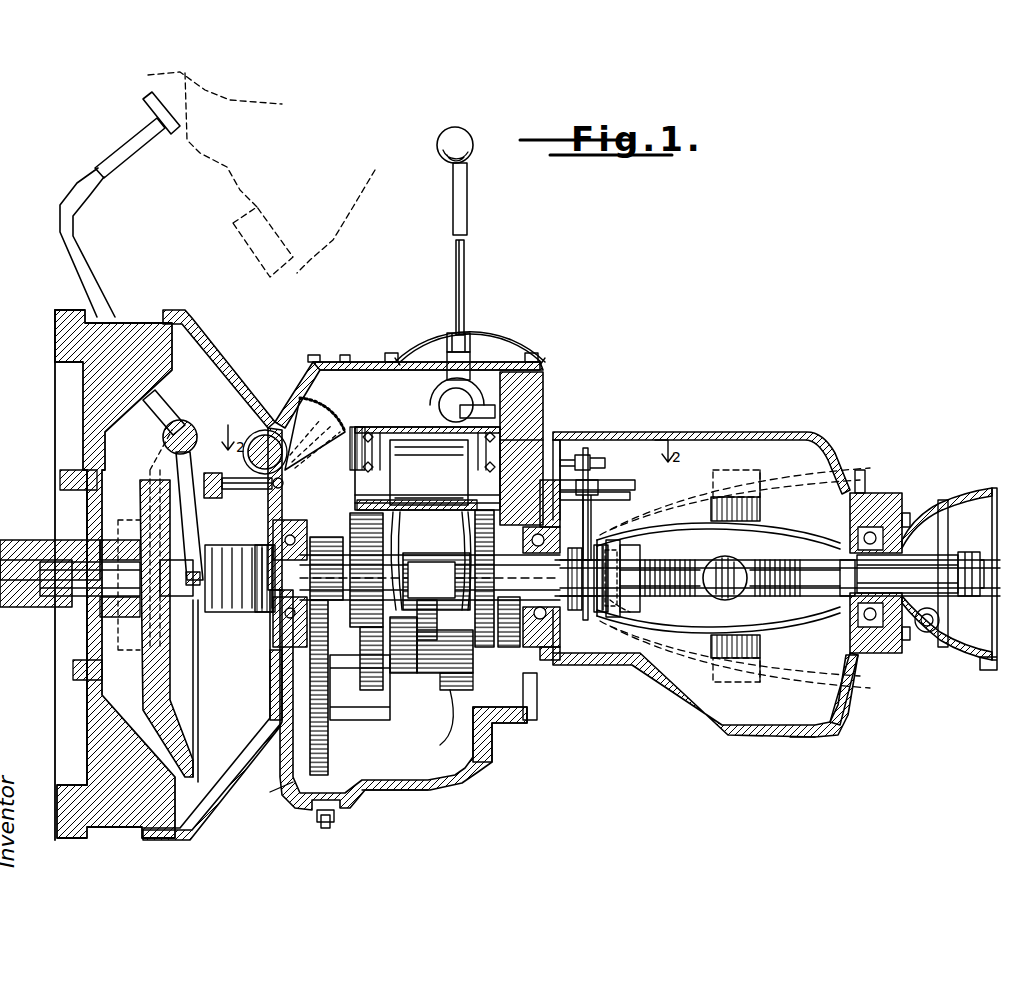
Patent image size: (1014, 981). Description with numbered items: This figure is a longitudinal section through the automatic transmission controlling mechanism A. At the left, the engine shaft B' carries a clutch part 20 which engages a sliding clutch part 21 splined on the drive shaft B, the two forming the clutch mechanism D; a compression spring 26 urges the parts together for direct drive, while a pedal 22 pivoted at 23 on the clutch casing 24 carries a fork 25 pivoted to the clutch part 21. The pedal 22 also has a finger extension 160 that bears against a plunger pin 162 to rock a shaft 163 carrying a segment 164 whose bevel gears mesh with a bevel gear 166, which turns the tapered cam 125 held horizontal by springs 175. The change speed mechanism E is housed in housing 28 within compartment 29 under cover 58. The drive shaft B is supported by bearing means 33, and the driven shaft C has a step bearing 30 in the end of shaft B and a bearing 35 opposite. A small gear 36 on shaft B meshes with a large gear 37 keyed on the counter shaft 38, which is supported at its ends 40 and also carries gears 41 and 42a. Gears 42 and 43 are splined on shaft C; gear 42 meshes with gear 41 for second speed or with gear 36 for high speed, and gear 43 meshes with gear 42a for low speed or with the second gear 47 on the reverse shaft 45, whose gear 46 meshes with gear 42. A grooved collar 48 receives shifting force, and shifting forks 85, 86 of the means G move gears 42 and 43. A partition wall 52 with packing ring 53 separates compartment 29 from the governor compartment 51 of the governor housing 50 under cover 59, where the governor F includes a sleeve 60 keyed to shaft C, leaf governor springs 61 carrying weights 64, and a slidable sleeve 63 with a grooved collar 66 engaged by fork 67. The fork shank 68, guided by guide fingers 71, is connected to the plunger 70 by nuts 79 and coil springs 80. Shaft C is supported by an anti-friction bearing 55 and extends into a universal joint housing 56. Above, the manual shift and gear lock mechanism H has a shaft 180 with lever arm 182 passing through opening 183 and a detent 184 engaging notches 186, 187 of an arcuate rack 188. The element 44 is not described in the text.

The clutch part 20 is at (92, 390).
The clutch mechanism D is at (68, 342).
The clutch casing 24 is at (202, 346).
The pedal or operating lever 22 is at (80, 262).
The engine shaft B' is at (50, 544).
The drive shaft B is at (90, 575).
The sliding clutch part 21 is at (165, 660).
The spring 26 is at (238, 603).
The pivot 23 is at (194, 420).
The fork 25 is at (196, 515).
The finger extension 160 is at (198, 447).
The plunger pin 162 is at (238, 476).
The rocking shaft 163 is at (268, 433).
The segment 164 is at (318, 408).
The bevel gear 166 is at (367, 434).
The automatic transmission controlling mechanism A is at (555, 366).
The opening 183 is at (484, 333).
The manual shift and gear lock mechanism H is at (466, 218).
The operating lever or arm 182 is at (469, 178).
The notch 186 is at (450, 334).
The notch 187 is at (433, 346).
The cover 58 is at (368, 359).
The arcuate rack 188 is at (509, 347).
The detent 184 is at (476, 363).
The shaft 180 is at (463, 400).
The shifting means G is at (405, 440).
The springs 175 is at (429, 459).
The cam 125 is at (429, 485).
The partition wall 52 is at (521, 468).
The bearing means 33 is at (290, 524).
The step bearing 30 is at (272, 556).
The small gear 36 is at (327, 538).
The counter shaft 38 is at (343, 722).
The gear 42 is at (375, 612).
The gear 41 is at (396, 680).
The shifting fork 85 is at (407, 561).
The shifting fork 86 is at (453, 561).
The grooved collar 48 is at (436, 576).
The main shaft 44 is at (431, 579).
The gear 43 is at (489, 552).
The gear 46 is at (436, 620).
The third shaft 45 is at (471, 633).
The bearing 35 is at (558, 652).
The second gear 47 is at (542, 650).
The transmission or change speed mechanism E is at (436, 790).
The compartment 29 is at (373, 788).
The large gear 37 is at (284, 790).
The ends 40 is at (278, 690).
The gear 42a is at (465, 690).
The housing 28 is at (494, 785).
The cover 59 is at (803, 432).
The governor housing 50 is at (710, 723).
The compartment 51 is at (798, 722).
The plunger or shaft 70 is at (555, 432).
The nuts 79 is at (578, 456).
The coil springs 80 is at (590, 529).
The shank 68 is at (606, 483).
The guide fingers 71 is at (612, 498).
The fork 67 is at (590, 546).
The stuffing box or packing ring 53 is at (586, 650).
The grooved collar 66 is at (616, 652).
The governor springs 61 is at (760, 545).
The sleeve 60 is at (850, 612).
The weight 64 is at (706, 510).
The sleeve 63 is at (607, 612).
The centrifugally operated governor F is at (770, 640).
The driven shaft C is at (795, 530).
The anti-friction bearing 55 is at (875, 530).
The universal joint housing 56 is at (960, 496).